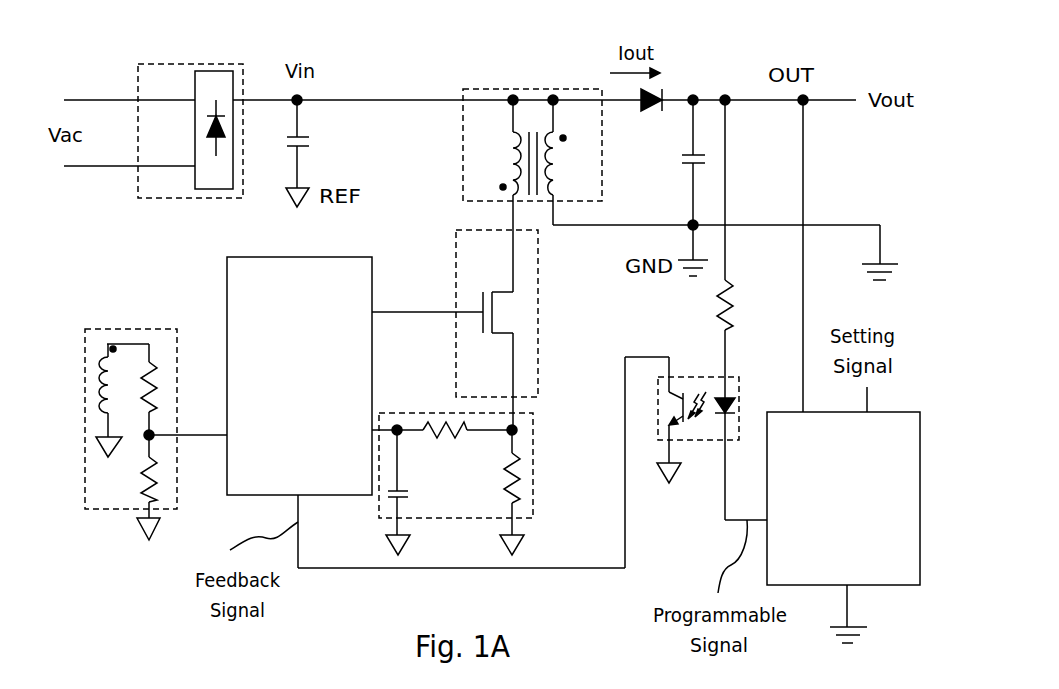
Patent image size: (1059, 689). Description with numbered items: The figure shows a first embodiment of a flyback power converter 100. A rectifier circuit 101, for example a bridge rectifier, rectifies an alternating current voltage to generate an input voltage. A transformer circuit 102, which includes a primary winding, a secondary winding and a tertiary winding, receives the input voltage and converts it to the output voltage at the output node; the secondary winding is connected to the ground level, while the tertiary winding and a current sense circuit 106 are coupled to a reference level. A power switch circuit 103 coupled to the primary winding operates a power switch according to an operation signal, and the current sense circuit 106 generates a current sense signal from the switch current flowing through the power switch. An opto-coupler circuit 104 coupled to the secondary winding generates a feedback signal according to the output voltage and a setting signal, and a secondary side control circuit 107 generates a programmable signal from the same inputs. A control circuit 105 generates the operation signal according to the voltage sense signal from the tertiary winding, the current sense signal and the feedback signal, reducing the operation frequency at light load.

The flyback power converter 100 is at (849, 65).
The rectifier circuit 101 is at (173, 190).
The transformer circuit 102 is at (493, 89).
The power switch circuit 103 is at (500, 264).
The opto-coupler circuit 104 is at (708, 377).
The control circuit 105 is at (272, 289).
The current sense circuit 106 is at (378, 507).
The secondary side control circuit 107 is at (818, 579).